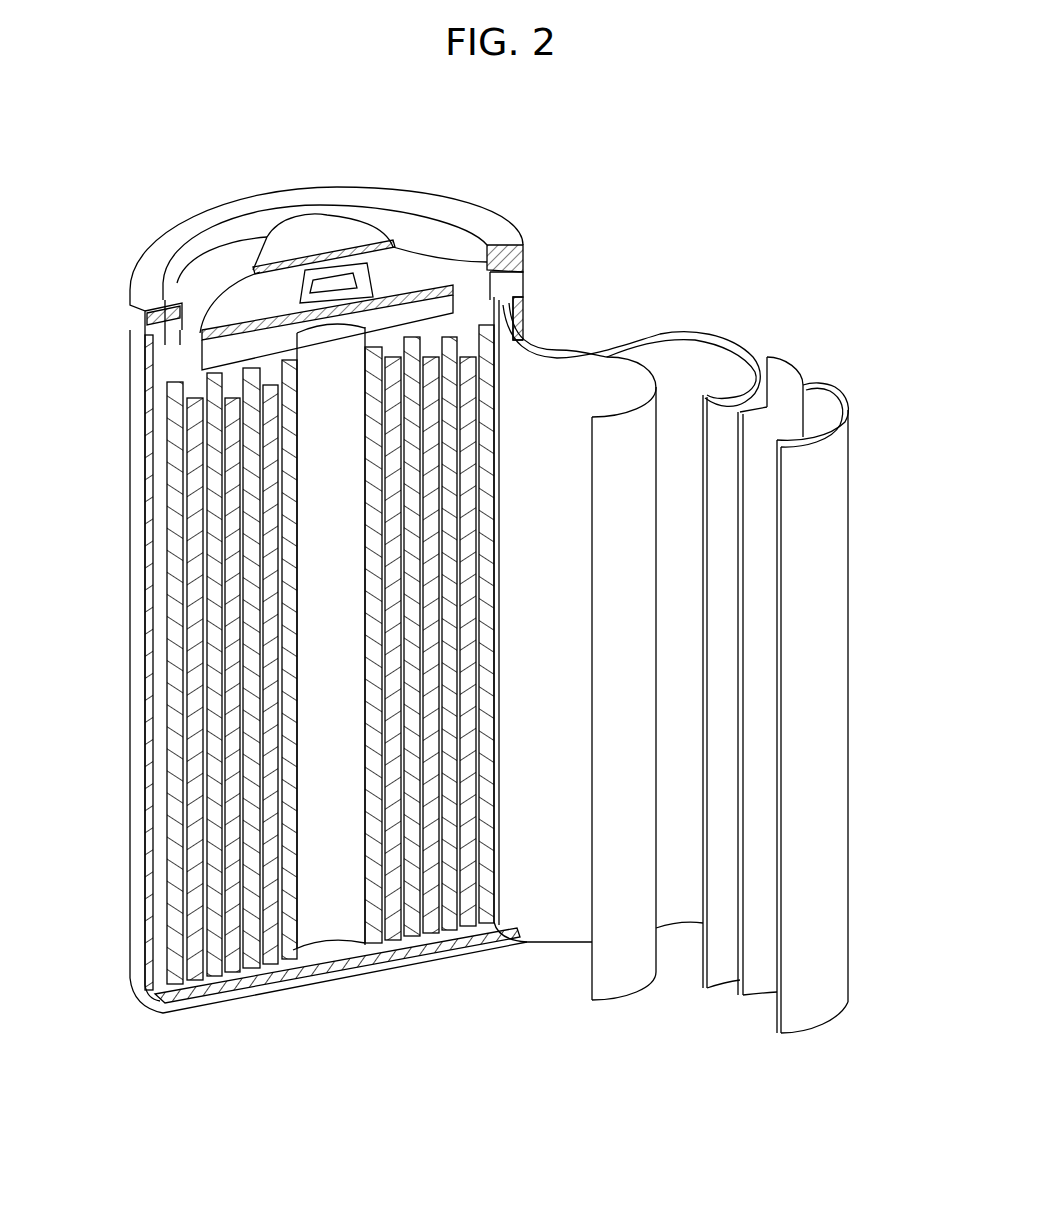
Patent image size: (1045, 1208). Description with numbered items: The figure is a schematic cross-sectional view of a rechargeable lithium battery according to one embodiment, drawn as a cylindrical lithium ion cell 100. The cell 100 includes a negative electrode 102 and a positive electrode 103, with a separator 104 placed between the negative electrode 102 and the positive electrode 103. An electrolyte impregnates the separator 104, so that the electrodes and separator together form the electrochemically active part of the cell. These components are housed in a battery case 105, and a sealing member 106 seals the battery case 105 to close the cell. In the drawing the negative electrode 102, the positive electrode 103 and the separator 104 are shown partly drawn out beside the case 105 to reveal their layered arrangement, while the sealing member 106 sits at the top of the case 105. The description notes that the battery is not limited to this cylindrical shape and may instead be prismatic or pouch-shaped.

The cylindrical lithium ion cell 100 is at (776, 276).
The negative electrode 102 is at (826, 518).
The positive electrode 103 is at (722, 415).
The separator 104 is at (778, 422).
The battery case 105 is at (141, 889).
The sealing member 106 is at (322, 232).